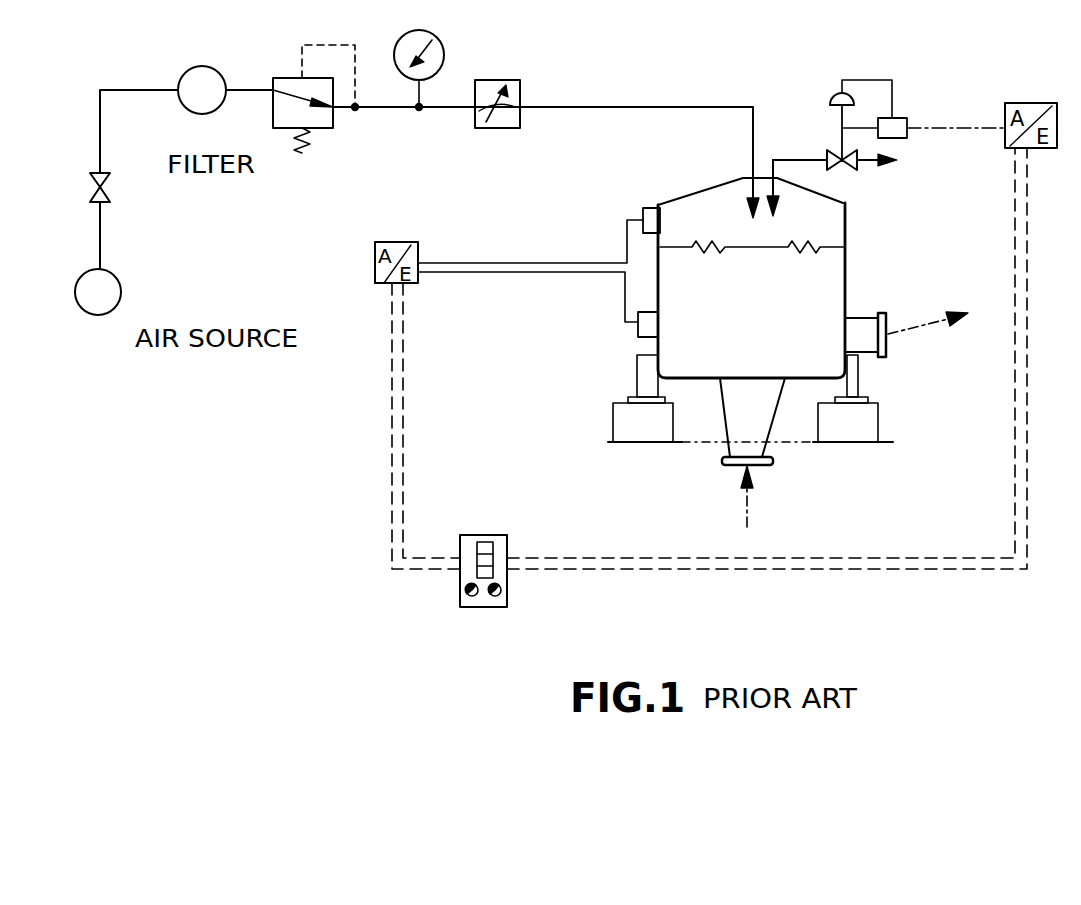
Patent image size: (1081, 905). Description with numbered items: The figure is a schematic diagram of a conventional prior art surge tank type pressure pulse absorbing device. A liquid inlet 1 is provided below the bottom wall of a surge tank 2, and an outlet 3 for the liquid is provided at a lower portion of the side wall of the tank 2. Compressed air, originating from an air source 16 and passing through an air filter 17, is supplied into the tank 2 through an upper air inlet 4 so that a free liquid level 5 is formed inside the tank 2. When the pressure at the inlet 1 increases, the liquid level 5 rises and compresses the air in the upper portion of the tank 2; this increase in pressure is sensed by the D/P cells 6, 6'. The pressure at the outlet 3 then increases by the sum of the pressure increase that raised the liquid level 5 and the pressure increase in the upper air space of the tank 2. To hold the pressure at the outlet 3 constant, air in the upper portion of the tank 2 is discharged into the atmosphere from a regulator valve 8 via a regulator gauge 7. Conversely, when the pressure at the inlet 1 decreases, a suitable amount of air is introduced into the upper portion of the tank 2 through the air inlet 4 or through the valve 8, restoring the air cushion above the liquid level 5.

The inlet 1 is at (734, 467).
The surge tank 2 is at (826, 292).
The outlet 3 is at (888, 346).
The air inlet 4 is at (752, 175).
The free liquid level 5 is at (826, 247).
The D/P cell 6 is at (650, 198).
The D/P cell 6' is at (620, 338).
The regulator gauge 7 is at (488, 535).
The regulator valve 8 is at (831, 150).
The air source 16 is at (114, 286).
The air filter 17 is at (202, 114).